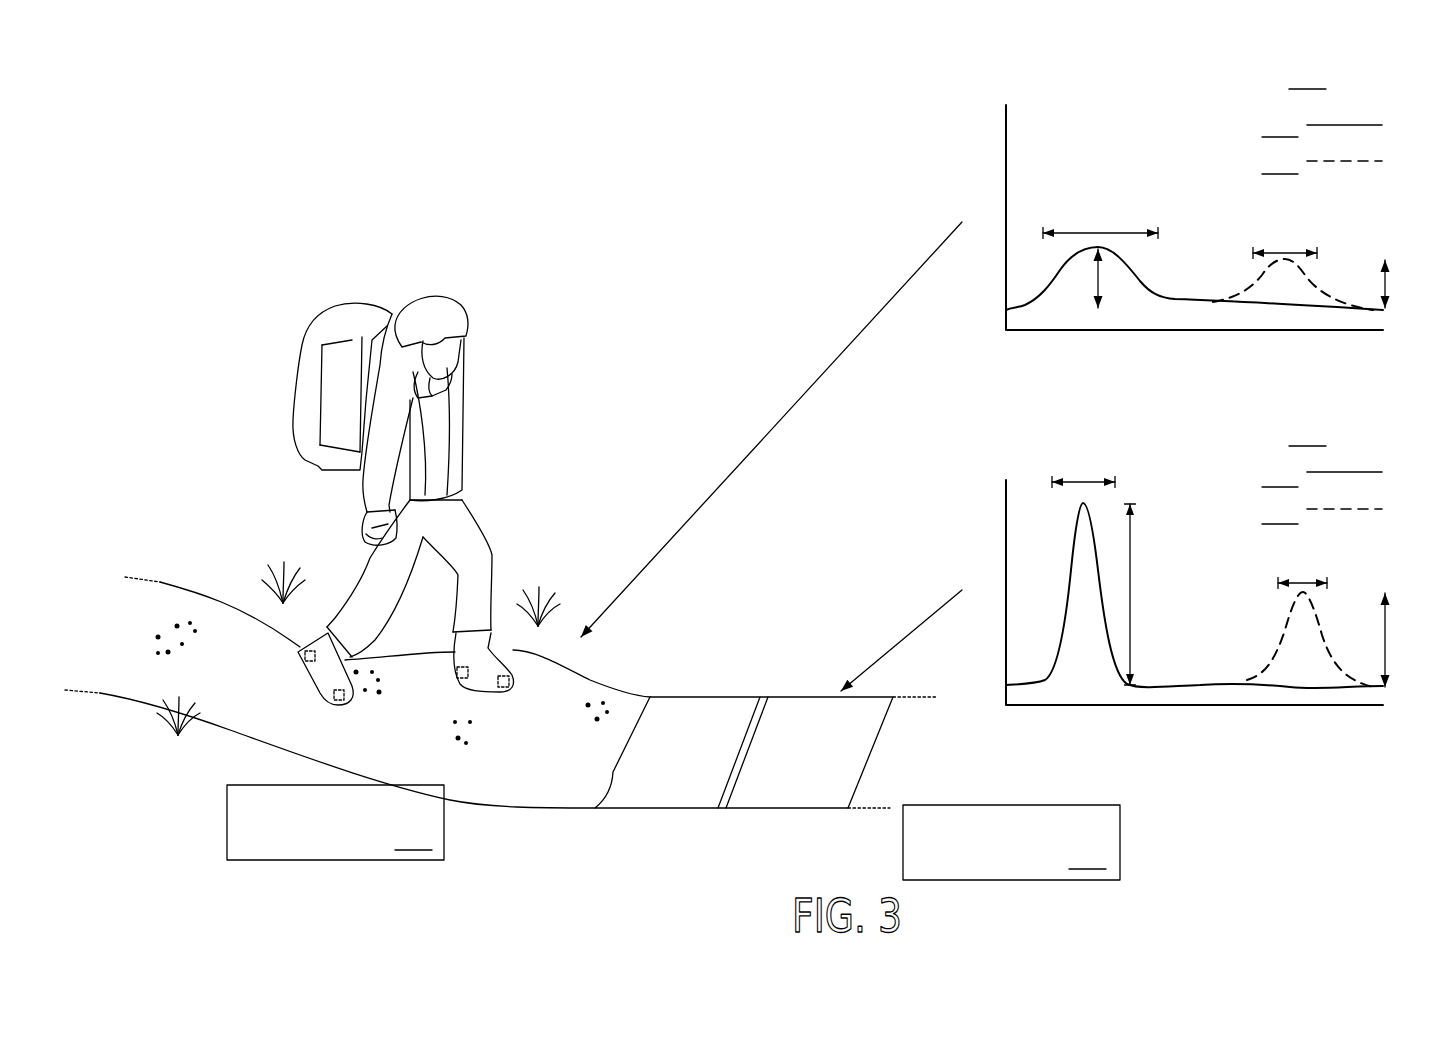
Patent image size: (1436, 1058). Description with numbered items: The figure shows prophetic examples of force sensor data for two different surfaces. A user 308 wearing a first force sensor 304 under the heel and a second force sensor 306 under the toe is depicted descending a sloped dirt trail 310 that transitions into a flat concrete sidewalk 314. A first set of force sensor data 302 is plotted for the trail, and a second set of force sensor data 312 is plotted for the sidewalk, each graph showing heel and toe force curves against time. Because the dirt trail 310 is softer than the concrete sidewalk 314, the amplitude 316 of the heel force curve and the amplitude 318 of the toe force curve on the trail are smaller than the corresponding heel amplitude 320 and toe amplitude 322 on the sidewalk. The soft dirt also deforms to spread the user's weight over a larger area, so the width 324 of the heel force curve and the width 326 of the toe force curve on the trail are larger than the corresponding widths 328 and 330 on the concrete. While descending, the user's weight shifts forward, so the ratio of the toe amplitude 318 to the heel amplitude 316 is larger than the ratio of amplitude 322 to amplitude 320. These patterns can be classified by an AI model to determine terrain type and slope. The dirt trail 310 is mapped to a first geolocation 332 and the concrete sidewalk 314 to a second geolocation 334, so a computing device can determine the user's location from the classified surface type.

The first force sensor data 302 is at (1201, 214).
The first force sensor 304 is at (300, 656).
The second force sensor 306 is at (327, 699).
The user 308 is at (465, 428).
The sloped dirt trail 310 is at (258, 618).
The second force sensor data 312 is at (1201, 580).
The flat concrete sidewalk 314 is at (731, 726).
The amplitude of heel force sensor data 316 is at (1100, 272).
The amplitude of toe force sensor data 318 is at (1387, 283).
The amplitude of heel force sensor data 320 is at (1132, 590).
The amplitude of toe force sensor data 322 is at (1387, 640).
The width of heel force curve 324 is at (1103, 230).
The width of toe force curve 326 is at (1290, 250).
The width of heel force curve 328 is at (1080, 484).
The width of toe force curve 330 is at (1300, 580).
The first geolocation 332 is at (403, 733).
The second geolocation 334 is at (821, 778).